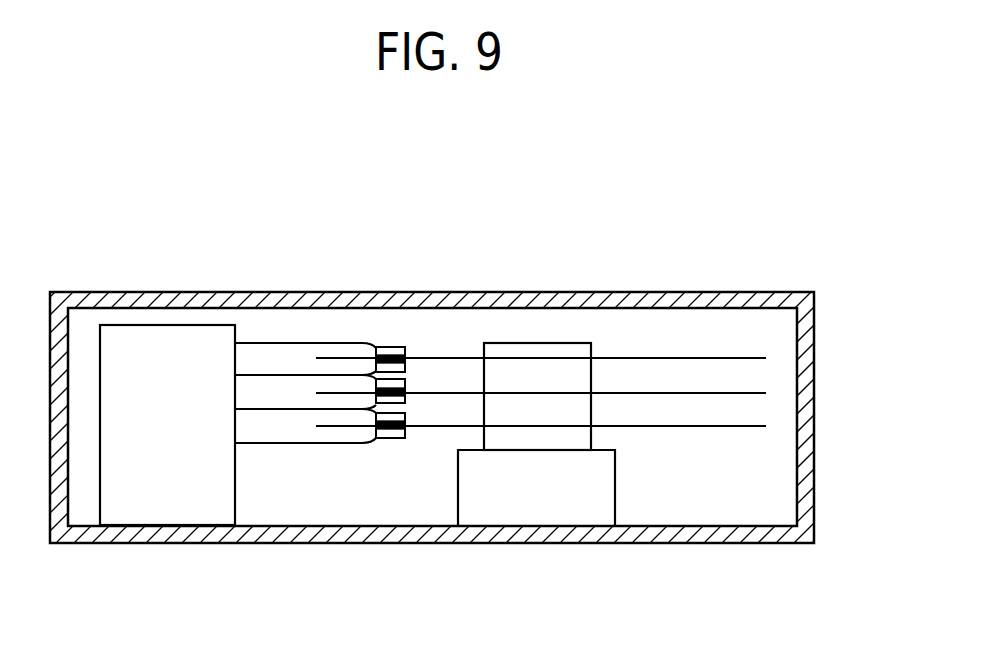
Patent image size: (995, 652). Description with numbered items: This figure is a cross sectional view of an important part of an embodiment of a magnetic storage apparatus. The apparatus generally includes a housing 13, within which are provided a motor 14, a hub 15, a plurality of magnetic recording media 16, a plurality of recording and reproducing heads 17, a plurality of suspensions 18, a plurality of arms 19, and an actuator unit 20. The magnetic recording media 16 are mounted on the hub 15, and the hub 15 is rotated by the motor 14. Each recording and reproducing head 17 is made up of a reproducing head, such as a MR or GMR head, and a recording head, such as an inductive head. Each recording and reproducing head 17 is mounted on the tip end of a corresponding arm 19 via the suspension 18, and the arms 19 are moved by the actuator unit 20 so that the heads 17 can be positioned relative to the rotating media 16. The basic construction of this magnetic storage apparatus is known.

The housing 13 is at (815, 504).
The motor 14 is at (537, 517).
The hub 15 is at (536, 343).
The magnetic recording media 16 is at (663, 359).
The recording and reproducing head 17 is at (411, 355).
The suspension 18 is at (369, 346).
The arm 19 is at (283, 343).
The actuator unit 20 is at (152, 517).